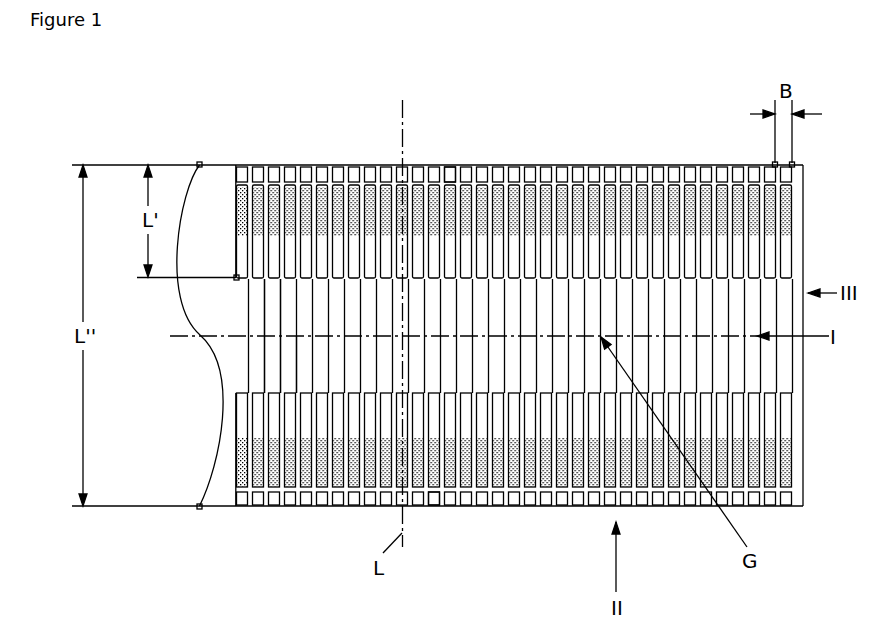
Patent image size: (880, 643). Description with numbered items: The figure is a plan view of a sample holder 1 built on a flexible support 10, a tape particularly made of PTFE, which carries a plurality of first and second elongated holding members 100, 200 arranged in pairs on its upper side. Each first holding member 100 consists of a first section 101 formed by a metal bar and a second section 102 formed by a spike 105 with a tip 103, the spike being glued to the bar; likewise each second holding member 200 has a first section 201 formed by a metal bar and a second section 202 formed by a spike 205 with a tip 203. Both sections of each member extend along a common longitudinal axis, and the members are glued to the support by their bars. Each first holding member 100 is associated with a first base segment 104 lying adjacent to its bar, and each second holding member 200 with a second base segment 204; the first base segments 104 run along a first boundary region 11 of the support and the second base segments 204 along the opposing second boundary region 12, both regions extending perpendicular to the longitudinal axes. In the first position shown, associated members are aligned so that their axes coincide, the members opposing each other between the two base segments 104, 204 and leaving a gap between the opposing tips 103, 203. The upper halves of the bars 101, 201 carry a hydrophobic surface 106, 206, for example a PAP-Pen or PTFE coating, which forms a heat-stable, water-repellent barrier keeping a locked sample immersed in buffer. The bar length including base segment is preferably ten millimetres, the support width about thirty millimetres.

The sample holder 1 is at (307, 158).
The flexible support 10 is at (227, 498).
The first boundary region 11 is at (452, 165).
The second boundary region 12 is at (427, 508).
The first holding member 100 is at (198, 164).
The first section (metal bar) 101 is at (236, 208).
The second section 102 is at (247, 300).
The tip 103 is at (247, 337).
The first base segment 104 is at (240, 176).
The spike 105 is at (247, 292).
The hydrophobic surface 106 is at (243, 258).
The second holding member 200 is at (237, 407).
The first section (metal bar) 201 is at (242, 473).
The second section 202 is at (247, 369).
The tip 203 is at (247, 347).
The second base segment 204 is at (243, 498).
The spike 205 is at (247, 377).
The hydrophobic surface 206 is at (247, 403).